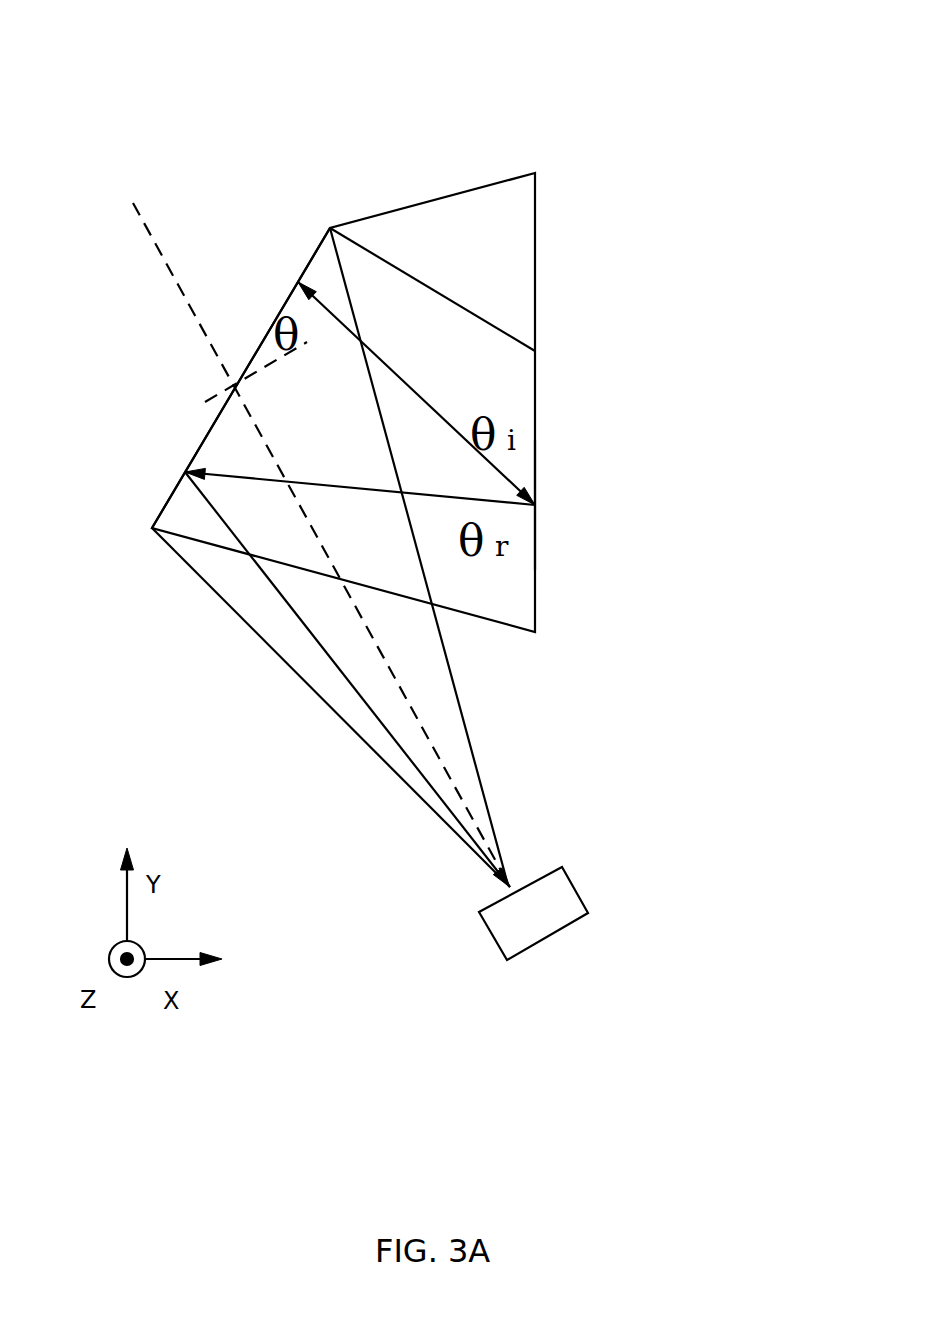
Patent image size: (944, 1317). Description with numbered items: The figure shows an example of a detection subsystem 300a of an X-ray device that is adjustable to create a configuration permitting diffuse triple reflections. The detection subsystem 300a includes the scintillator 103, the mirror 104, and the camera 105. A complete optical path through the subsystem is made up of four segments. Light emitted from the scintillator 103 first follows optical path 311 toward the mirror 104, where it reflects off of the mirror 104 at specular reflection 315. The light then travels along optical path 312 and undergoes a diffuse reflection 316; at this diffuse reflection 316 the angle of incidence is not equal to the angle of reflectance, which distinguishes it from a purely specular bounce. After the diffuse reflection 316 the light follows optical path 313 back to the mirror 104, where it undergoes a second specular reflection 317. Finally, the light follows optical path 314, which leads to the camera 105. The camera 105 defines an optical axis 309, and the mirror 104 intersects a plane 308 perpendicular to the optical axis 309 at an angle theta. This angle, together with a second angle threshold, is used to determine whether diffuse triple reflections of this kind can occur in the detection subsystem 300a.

The detection subsystem 300a is at (134, 64).
The scintillator 103 is at (535, 288).
The mirror 104 is at (285, 304).
The camera 105 is at (543, 873).
The plane 308 is at (210, 424).
The optical axis 309 is at (433, 743).
The optical path 311 is at (478, 333).
The optical path 312 is at (420, 398).
The optical path 313 is at (331, 484).
The optical path 314 is at (322, 647).
The specular reflection 315 is at (289, 274).
The diffuse reflection 316 is at (537, 505).
The specular reflection 317 is at (177, 469).